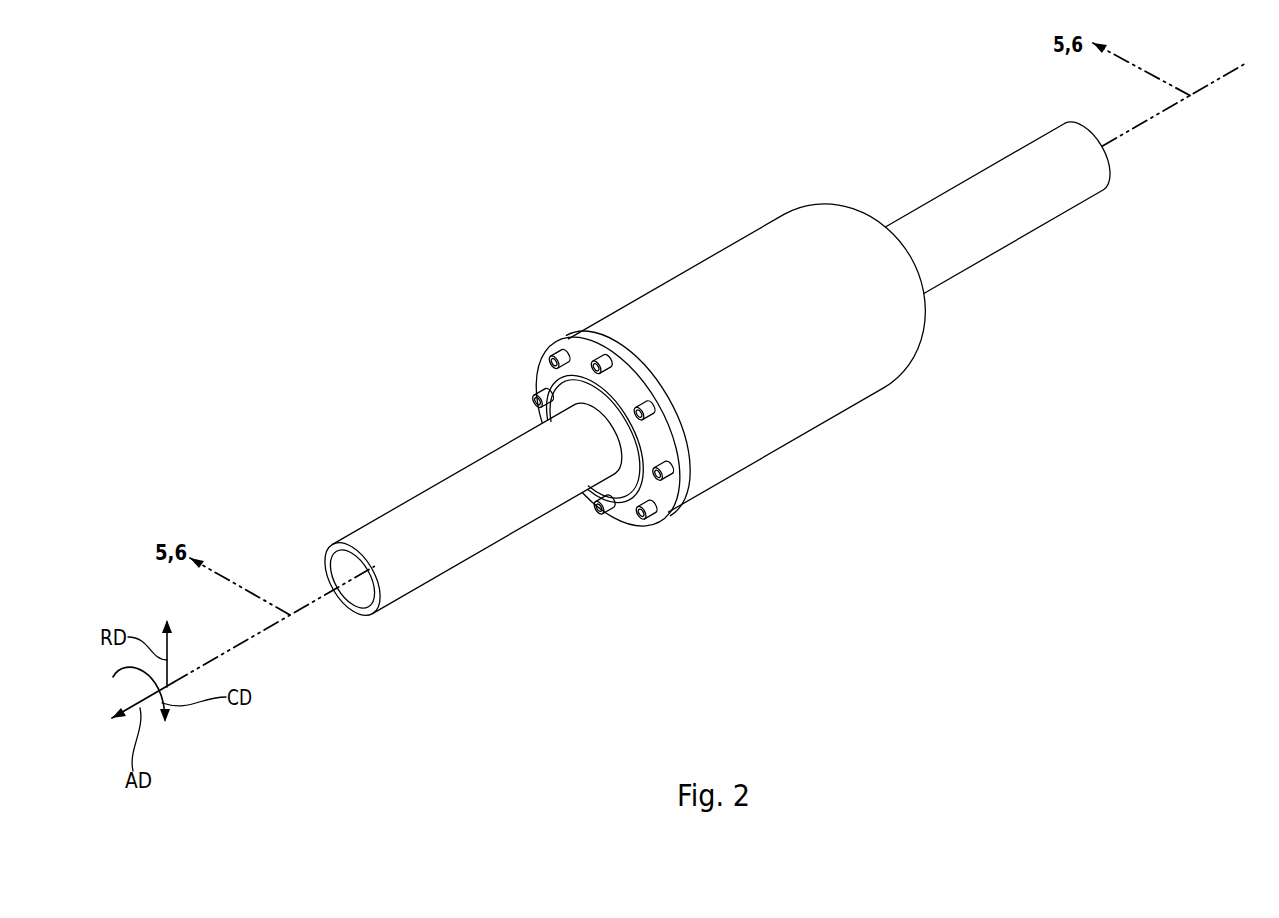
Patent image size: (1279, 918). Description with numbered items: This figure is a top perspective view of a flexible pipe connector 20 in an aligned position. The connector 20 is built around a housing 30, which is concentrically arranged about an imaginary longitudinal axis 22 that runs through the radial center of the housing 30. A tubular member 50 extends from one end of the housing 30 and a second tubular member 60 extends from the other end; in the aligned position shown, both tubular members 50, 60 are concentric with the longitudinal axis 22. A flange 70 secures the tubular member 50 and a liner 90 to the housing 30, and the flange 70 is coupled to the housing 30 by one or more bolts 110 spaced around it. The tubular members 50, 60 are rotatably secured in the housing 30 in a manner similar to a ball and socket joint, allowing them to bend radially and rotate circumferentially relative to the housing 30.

The flexible pipe connector 20 is at (337, 143).
The longitudinal axis 22 is at (1200, 90).
The housing 30 is at (738, 272).
The tubular member 50 is at (452, 497).
The tubular member 60 is at (983, 197).
The flange 70 is at (567, 335).
The liner 90 is at (623, 502).
The bolts 110 is at (528, 404).